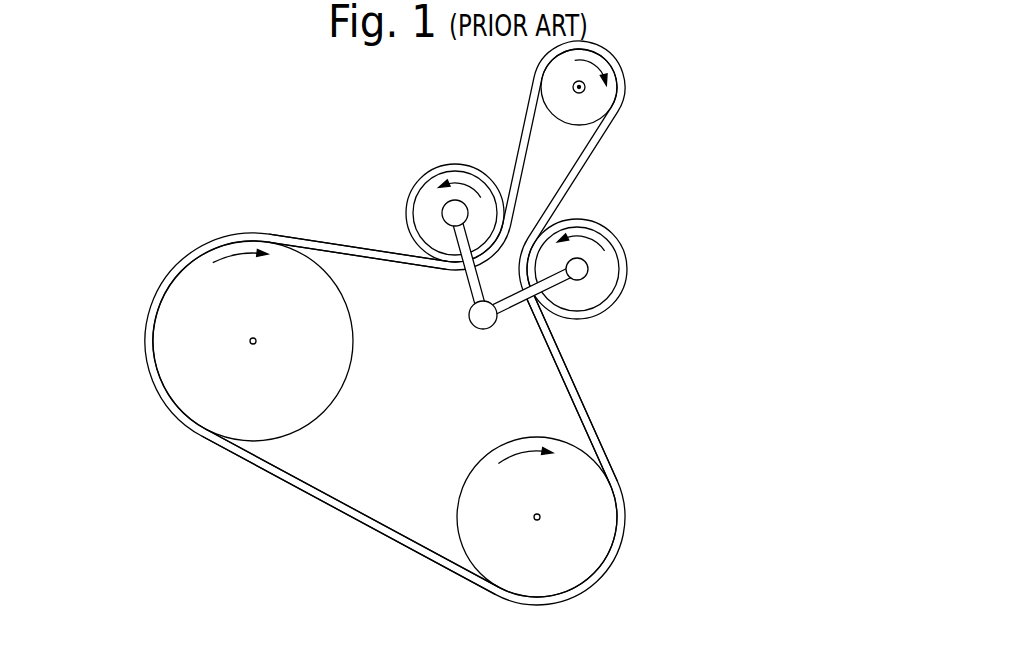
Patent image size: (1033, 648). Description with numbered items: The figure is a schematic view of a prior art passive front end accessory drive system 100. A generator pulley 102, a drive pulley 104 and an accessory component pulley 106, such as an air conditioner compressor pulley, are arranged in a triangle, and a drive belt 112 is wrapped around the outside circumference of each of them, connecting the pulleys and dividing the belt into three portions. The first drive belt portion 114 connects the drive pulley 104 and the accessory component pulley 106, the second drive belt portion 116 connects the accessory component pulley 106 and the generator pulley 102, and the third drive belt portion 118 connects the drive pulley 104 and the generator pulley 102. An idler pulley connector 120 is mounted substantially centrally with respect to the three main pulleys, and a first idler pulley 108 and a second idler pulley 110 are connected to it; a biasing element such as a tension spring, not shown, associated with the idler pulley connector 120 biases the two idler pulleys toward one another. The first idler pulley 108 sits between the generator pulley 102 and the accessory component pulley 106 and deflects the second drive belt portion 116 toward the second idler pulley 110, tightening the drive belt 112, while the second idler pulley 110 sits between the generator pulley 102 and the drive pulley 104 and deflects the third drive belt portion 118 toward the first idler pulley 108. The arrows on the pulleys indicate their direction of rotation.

The passive front end accessory drive system 100 is at (165, 198).
The generator pulley 102 is at (618, 70).
The drive pulley 104 is at (172, 348).
The accessory component pulley 106 is at (595, 545).
The first idler pulley 108 is at (622, 250).
The second idler pulley 110 is at (450, 168).
The drive belt 112 is at (263, 470).
The first drive belt portion 114 is at (370, 520).
The second drive belt portion 116 is at (568, 373).
The third drive belt portion 118 is at (345, 245).
The idler pulley connector 120 is at (475, 328).